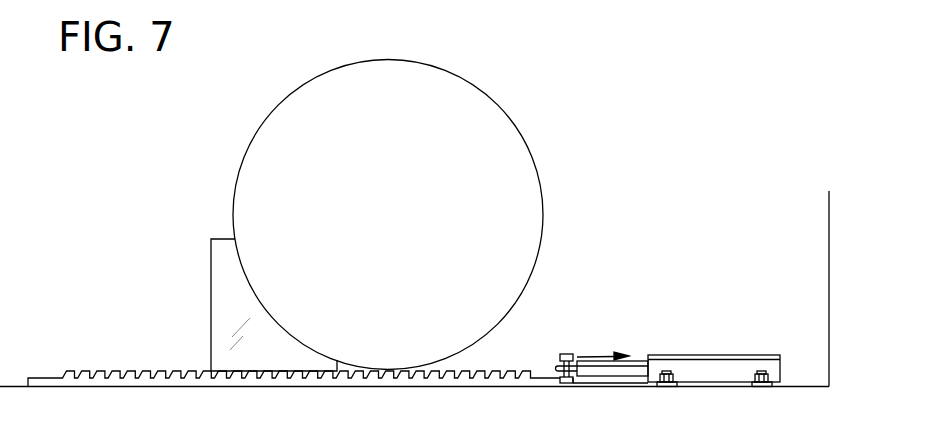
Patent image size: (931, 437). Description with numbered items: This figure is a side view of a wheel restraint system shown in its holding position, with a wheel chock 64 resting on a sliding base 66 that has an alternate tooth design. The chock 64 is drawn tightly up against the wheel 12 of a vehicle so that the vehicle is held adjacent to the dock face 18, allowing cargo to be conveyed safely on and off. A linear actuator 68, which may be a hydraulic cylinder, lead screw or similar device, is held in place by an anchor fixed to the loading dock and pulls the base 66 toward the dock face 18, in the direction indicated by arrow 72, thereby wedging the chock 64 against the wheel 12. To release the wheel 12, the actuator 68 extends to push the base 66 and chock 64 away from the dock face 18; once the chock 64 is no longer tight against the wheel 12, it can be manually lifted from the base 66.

The wheel 12 is at (503, 105).
The dock face 18 is at (829, 263).
The wheel chock 64 is at (211, 282).
The sliding base 66 is at (46, 378).
The linear actuator 68 is at (707, 355).
The arrow 72 is at (592, 355).